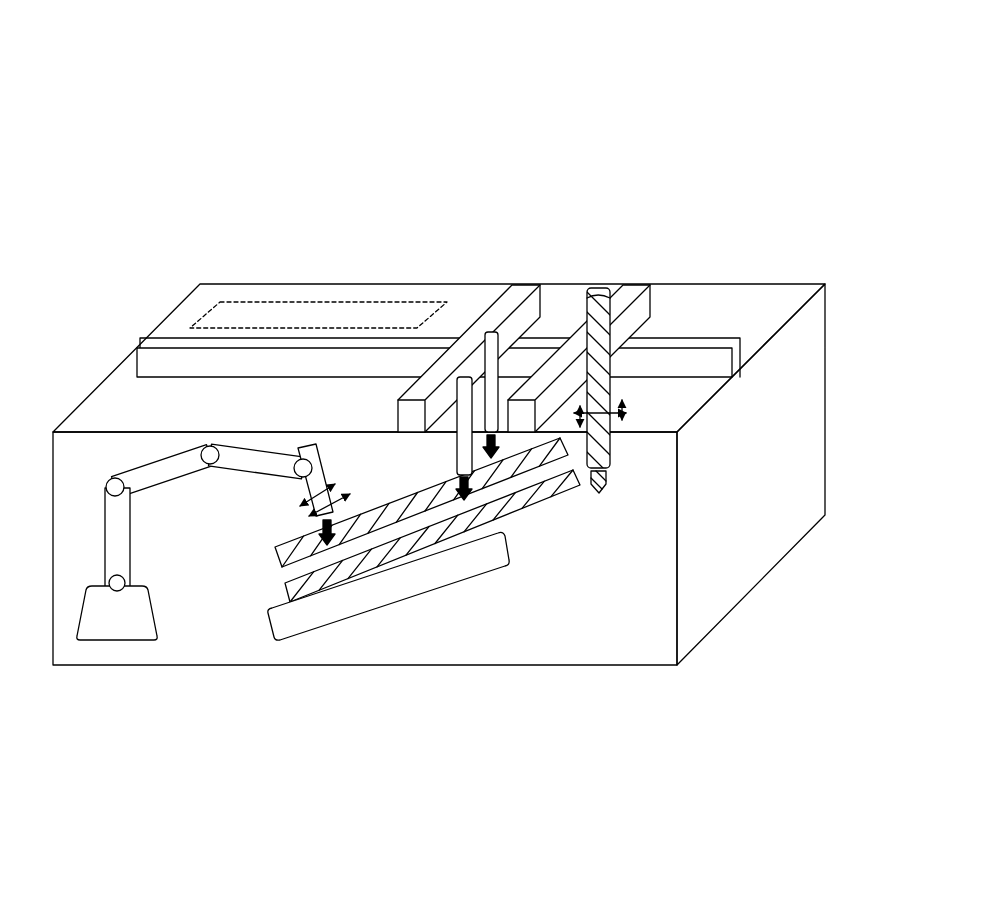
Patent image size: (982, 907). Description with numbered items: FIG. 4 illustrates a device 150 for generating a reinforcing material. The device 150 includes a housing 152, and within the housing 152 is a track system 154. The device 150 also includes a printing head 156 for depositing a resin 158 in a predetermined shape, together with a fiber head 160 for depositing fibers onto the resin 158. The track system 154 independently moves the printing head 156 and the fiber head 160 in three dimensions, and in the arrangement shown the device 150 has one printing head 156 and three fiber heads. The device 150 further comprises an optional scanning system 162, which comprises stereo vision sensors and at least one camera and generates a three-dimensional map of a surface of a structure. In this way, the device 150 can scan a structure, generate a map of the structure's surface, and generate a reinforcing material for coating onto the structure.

The device 150 is at (545, 104).
The housing 152 is at (792, 297).
The track system 154 is at (470, 310).
The printing head 156 is at (612, 301).
The resin 158 is at (530, 503).
The fiber head 160 is at (485, 362).
The scanning system 162 is at (276, 302).